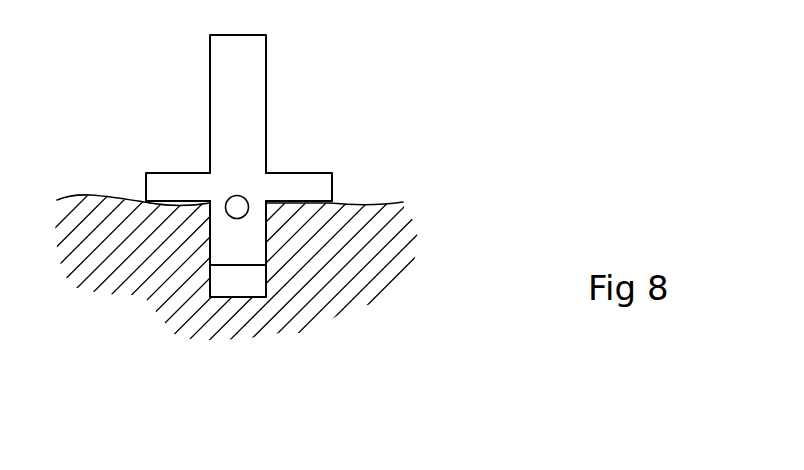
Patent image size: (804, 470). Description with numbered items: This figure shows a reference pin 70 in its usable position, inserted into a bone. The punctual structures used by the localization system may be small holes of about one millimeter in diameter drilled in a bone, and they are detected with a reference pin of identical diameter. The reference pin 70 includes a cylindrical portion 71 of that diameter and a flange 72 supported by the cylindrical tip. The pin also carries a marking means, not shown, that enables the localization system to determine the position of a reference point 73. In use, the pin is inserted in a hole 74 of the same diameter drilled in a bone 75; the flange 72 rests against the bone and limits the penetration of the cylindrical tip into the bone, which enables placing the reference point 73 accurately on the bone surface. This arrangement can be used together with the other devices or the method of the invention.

The reference pin 70 is at (137, 78).
The cylindrical portion 71 is at (248, 92).
The flange 72 is at (318, 188).
The reference point 73 is at (241, 213).
The hole 74 is at (240, 283).
The bone 75 is at (145, 279).